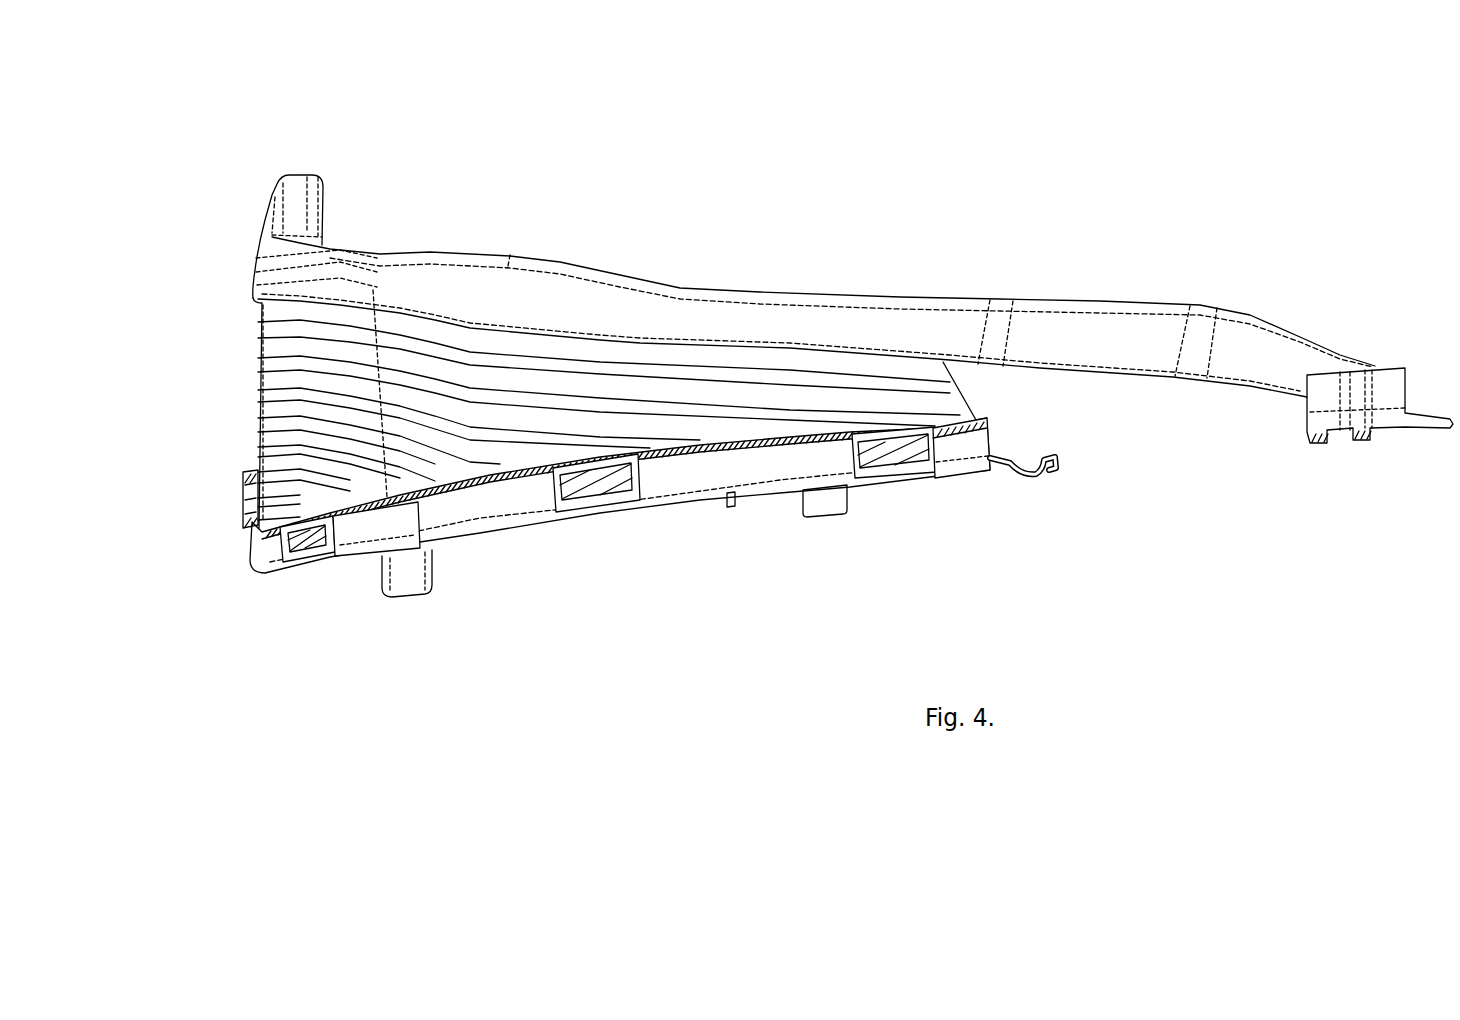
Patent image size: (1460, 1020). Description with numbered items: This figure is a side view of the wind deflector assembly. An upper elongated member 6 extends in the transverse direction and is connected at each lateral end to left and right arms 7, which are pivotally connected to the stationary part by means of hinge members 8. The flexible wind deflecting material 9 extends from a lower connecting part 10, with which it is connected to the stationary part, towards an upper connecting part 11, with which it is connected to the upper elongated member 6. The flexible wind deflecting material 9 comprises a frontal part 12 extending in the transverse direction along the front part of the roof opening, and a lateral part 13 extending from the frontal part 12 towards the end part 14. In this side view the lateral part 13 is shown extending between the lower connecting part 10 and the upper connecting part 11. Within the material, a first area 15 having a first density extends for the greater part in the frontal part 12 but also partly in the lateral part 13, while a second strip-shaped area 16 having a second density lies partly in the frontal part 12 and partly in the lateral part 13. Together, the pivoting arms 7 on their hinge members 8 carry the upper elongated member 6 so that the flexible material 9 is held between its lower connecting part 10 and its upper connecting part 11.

The upper elongated member 6 is at (298, 188).
The arms 7 is at (870, 328).
The hinge members 8 is at (1386, 438).
The flexible wind deflecting material 9 is at (244, 388).
The lower connecting part 10 is at (380, 531).
The upper connecting part 11 is at (310, 320).
The frontal part 12 is at (248, 432).
The lateral part 13 is at (469, 407).
The end part 14 is at (1025, 399).
The first area 15 is at (742, 397).
The second strip-shaped area 16 is at (552, 400).